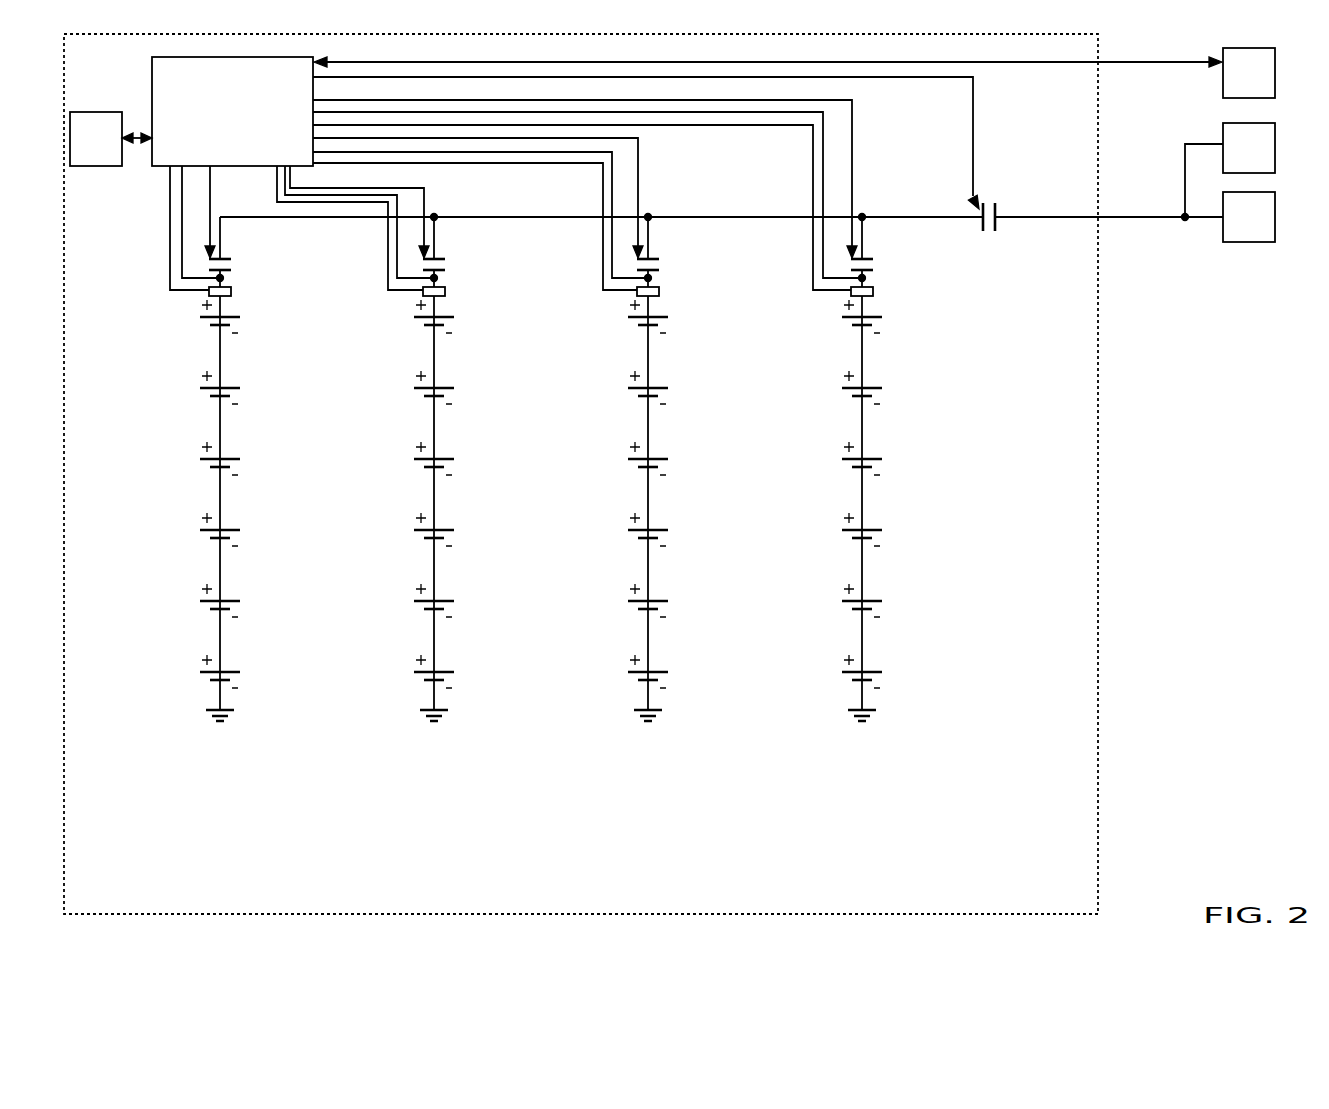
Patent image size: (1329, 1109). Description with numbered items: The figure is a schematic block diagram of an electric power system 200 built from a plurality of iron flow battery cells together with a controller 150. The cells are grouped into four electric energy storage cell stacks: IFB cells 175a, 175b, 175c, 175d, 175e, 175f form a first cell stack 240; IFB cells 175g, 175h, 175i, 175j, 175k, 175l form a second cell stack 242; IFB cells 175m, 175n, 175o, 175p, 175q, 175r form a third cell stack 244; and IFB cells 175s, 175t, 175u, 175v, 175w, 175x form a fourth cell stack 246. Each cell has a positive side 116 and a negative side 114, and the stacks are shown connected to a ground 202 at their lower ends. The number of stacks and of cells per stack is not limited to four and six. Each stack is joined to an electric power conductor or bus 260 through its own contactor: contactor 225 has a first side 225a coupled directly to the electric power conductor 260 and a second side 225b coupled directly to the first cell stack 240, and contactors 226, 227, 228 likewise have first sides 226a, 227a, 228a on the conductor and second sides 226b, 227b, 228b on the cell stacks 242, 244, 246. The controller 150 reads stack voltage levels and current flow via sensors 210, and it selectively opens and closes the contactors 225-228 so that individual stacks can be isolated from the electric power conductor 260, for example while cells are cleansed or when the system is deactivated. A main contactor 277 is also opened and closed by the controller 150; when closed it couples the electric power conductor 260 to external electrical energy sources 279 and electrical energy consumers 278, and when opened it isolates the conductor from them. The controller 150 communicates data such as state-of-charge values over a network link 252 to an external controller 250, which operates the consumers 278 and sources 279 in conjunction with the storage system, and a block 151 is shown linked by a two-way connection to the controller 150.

The negative side 114 is at (217, 325).
The positive side 116 is at (224, 316).
The controller 150 is at (152, 57).
The user interface 151 is at (111, 139).
The IFB cell 175a is at (195, 306).
The IFB cell 175b is at (152, 387).
The IFB cell 175c is at (152, 458).
The IFB cell 175d is at (152, 529).
The IFB cell 175e is at (152, 600).
The IFB cell 175f is at (152, 671).
The IFB cell 175g is at (366, 316).
The IFB cell 175h is at (366, 387).
The IFB cell 175i is at (366, 458).
The IFB cell 175j is at (366, 529).
The IFB cell 175k is at (366, 600).
The IFB cell 175l is at (366, 671).
The IFB cell 175m is at (580, 316).
The IFB cell 175n is at (580, 387).
The IFB cell 175o is at (580, 458).
The IFB cell 175p is at (580, 529).
The IFB cell 175q is at (580, 600).
The IFB cell 175r is at (580, 671).
The IFB cell 175s is at (794, 316).
The IFB cell 175t is at (794, 387).
The IFB cell 175u is at (794, 458).
The IFB cell 175v is at (794, 529).
The IFB cell 175w is at (794, 600).
The IFB cell 175x is at (794, 671).
The electric power system 200 is at (1098, 914).
The ground 202 is at (212, 710).
The sensor 210 is at (232, 290).
The contactor 225 is at (257, 252).
The first side 225a is at (221, 257).
The second side 225b is at (232, 270).
The contactor 226 is at (471, 252).
The first side 226a is at (471, 239).
The second side 226b is at (471, 270).
The contactor 227 is at (685, 252).
The first side 227a is at (685, 239).
The second side 227b is at (685, 270).
The contactor 228 is at (899, 252).
The first side 228a is at (899, 239).
The second side 228b is at (899, 270).
The first cell stack 240 is at (252, 695).
The second cell stack 242 is at (394, 532).
The third cell stack 244 is at (608, 532).
The fourth cell stack 246 is at (822, 532).
The external controller 250 is at (1249, 73).
The communication line 252 is at (1114, 64).
The electric power conductor 260 is at (678, 217).
The main contactor 277 is at (999, 200).
The electrical energy consumers 278 is at (1249, 217).
The electrical energy sources 279 is at (1230, 170).